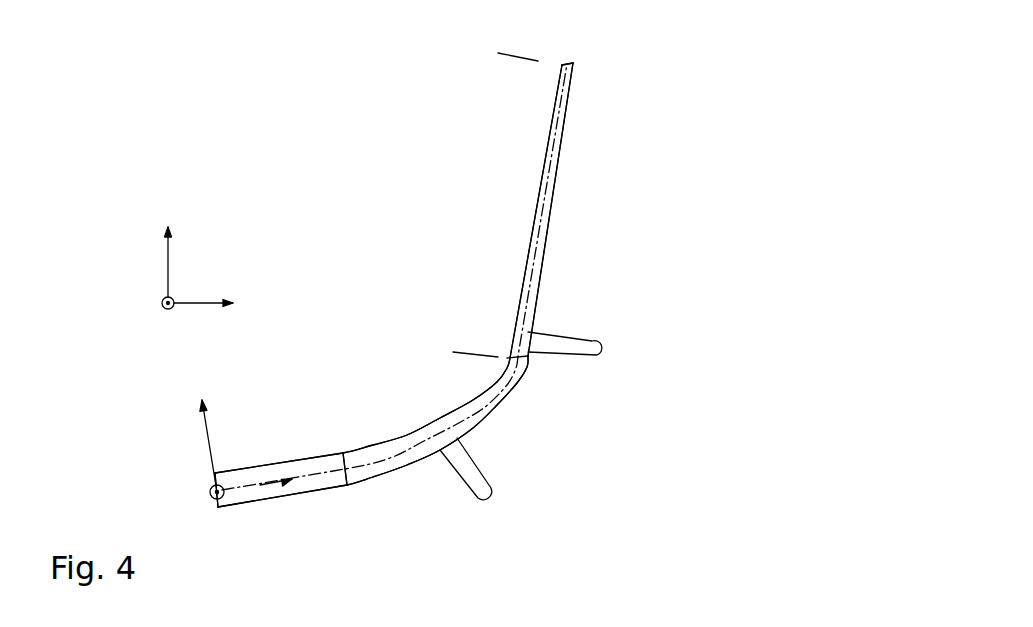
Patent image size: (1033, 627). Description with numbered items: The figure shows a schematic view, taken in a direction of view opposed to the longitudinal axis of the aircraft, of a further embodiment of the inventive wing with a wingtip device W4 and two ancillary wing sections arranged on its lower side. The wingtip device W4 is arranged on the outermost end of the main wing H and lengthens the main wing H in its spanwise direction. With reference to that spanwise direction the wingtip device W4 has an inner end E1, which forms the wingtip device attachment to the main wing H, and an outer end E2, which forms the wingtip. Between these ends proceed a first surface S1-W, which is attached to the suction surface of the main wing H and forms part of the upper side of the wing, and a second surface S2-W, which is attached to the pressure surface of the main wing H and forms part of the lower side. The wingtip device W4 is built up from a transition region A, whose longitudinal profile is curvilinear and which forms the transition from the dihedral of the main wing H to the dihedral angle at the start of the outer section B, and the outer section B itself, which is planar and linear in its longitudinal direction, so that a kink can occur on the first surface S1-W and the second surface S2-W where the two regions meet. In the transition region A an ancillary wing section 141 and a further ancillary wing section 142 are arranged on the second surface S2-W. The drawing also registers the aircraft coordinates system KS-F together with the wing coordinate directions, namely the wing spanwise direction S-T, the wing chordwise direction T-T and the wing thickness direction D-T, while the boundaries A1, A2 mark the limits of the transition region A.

The wingtip device W4 is at (400, 130).
The outer end E2 is at (568, 60).
The inner end E1 is at (210, 491).
The first surface of the wingtip device S1-W is at (527, 237).
The second surface of the wingtip device S2-W is at (497, 408).
The first section boundary A1 is at (336, 452).
The second section boundary A2 is at (503, 360).
The transition region A is at (421, 437).
The outer section B is at (517, 63).
The main wing H is at (302, 468).
The wing thickness direction D-T is at (207, 422).
The wing spanwise direction S-T is at (247, 487).
The wing chordwise direction T-T is at (212, 497).
The ancillary wing section 141 is at (482, 507).
The ancillary wing section 142 is at (582, 365).
The aircraft coordinates system KS-F is at (137, 270).